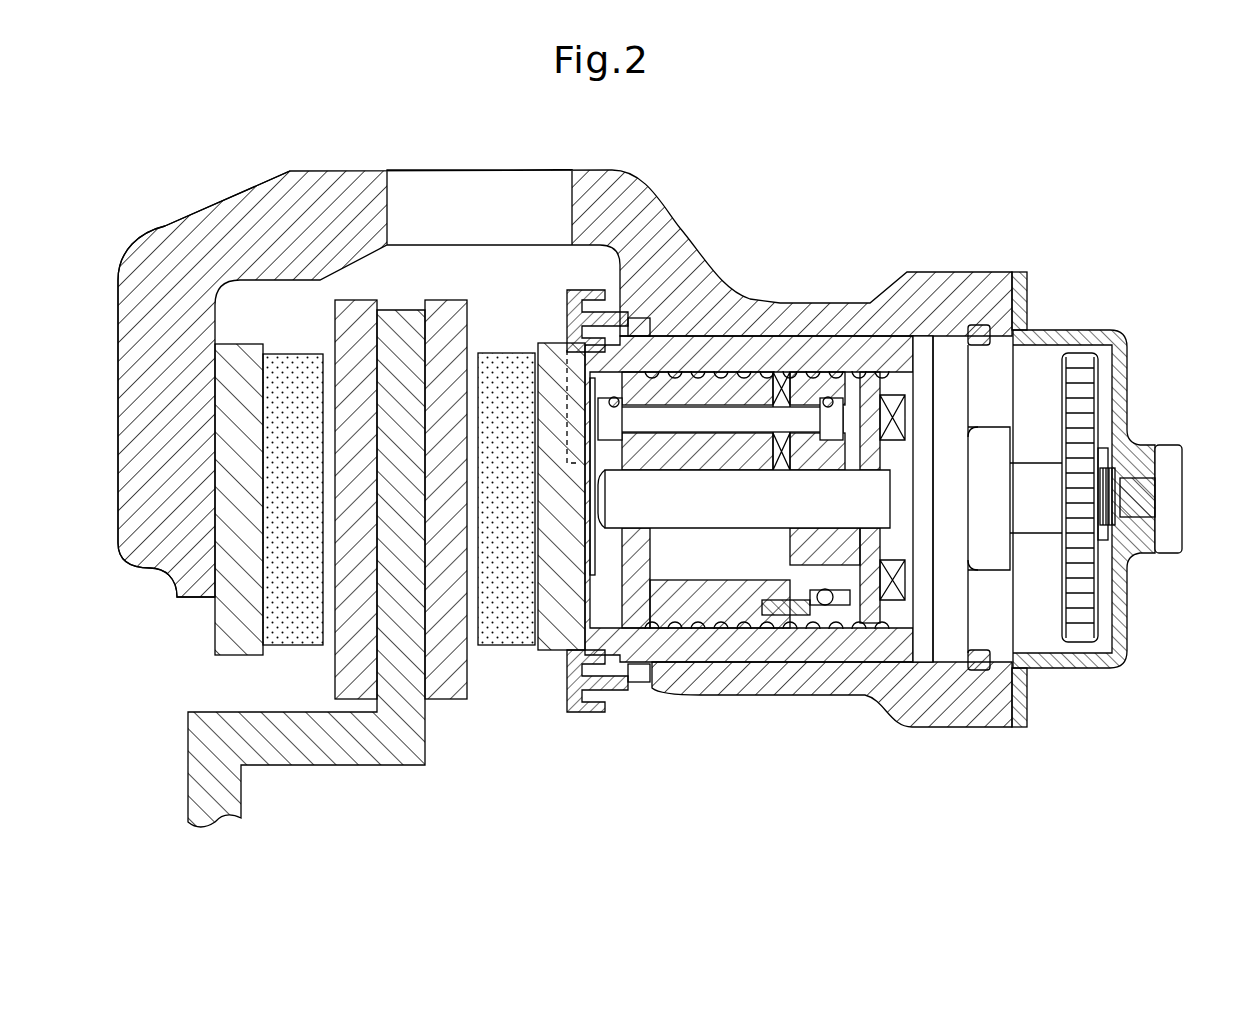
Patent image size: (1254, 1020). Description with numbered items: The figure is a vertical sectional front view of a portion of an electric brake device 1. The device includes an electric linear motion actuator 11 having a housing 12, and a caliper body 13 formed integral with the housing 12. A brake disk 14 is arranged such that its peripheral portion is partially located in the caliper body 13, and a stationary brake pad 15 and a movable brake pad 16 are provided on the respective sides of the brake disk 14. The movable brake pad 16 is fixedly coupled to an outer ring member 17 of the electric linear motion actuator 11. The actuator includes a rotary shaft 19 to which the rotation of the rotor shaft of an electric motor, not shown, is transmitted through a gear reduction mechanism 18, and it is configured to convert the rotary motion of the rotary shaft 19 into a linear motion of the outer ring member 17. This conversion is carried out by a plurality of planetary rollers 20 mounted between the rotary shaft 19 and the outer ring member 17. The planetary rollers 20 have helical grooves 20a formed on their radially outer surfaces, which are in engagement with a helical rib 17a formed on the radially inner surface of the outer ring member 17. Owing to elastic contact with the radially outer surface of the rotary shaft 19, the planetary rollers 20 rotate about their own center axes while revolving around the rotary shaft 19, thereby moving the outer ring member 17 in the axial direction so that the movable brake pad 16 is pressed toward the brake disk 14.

The electric brake device 1 is at (257, 180).
The electric linear motion actuator 11 is at (1097, 323).
The housing 12 is at (995, 300).
The caliper body 13 is at (163, 253).
The brake disk 14 is at (328, 745).
The stationary brake pad 15 is at (287, 618).
The movable brake pad 16 is at (510, 622).
The outer ring member 17 is at (766, 345).
The helical rib 17a is at (668, 365).
The gear reduction mechanism 18 is at (1100, 597).
The rotary shaft 19 is at (862, 505).
The planetary rollers 20 is at (718, 450).
The helical grooves 20a is at (678, 445).